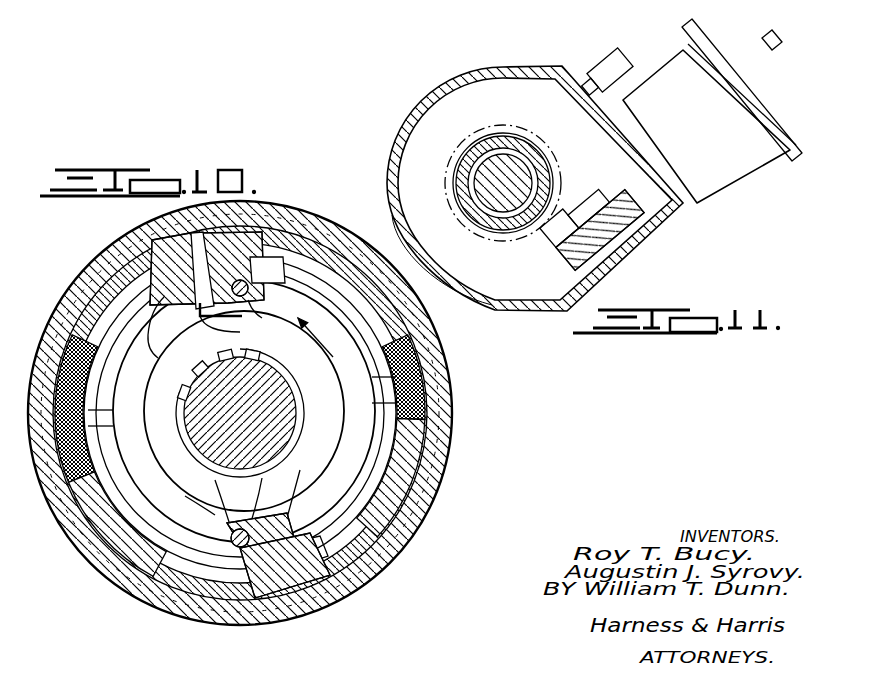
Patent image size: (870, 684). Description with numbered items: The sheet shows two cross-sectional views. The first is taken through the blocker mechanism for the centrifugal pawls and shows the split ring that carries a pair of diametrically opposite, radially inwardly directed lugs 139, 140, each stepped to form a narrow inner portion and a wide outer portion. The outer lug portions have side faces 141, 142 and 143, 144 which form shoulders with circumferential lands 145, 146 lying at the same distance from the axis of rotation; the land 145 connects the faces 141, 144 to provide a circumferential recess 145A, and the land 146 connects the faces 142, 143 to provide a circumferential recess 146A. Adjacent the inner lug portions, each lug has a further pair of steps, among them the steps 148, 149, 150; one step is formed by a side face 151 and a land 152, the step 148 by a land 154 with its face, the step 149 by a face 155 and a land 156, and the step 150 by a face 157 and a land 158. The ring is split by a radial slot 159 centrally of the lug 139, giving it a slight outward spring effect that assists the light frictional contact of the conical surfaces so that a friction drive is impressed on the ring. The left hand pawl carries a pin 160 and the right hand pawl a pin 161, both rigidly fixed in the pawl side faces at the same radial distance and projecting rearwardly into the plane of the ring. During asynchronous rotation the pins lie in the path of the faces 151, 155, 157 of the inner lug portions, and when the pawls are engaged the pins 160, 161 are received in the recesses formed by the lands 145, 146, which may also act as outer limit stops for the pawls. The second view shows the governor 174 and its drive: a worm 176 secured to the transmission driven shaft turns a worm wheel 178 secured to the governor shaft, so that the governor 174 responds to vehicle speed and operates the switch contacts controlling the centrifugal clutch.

In FIG. 10, the lug 139 is at (257, 262).
In FIG. 10, the lug 140 is at (236, 555).
In FIG. 10, the side face 141 is at (172, 280).
In FIG. 10, the side face 142 is at (288, 250).
In FIG. 10, the side face 143 is at (74, 527).
In FIG. 10, the side face 144 is at (196, 529).
In FIG. 10, the circumferential land 145 is at (170, 327).
In FIG. 10, the circumferential recess 145A is at (92, 548).
In FIG. 10, the circumferential land 146 is at (365, 318).
In FIG. 10, the circumferential recess 146A is at (350, 300).
In FIG. 10, the step 148 is at (258, 300).
In FIG. 10, the step 149 is at (288, 446).
In FIG. 10, the step 150 is at (226, 494).
In FIG. 10, the side face 151 is at (220, 325).
In FIG. 10, the land 152 is at (145, 352).
In FIG. 10, the land 154 is at (287, 290).
In FIG. 10, the face 155 is at (286, 462).
In FIG. 10, the land 156 is at (242, 575).
In FIG. 10, the face 157 is at (298, 505).
In FIG. 10, the land 158 is at (240, 333).
In FIG. 10, the radial slot 159 is at (188, 237).
In FIG. 10, the pin 160 is at (277, 501).
In FIG. 10, the pin 161 is at (262, 318).
In FIG. 11, the governor 174 is at (718, 129).
In FIG. 11, the worm 176 is at (453, 147).
In FIG. 11, the worm wheel 178 is at (605, 270).